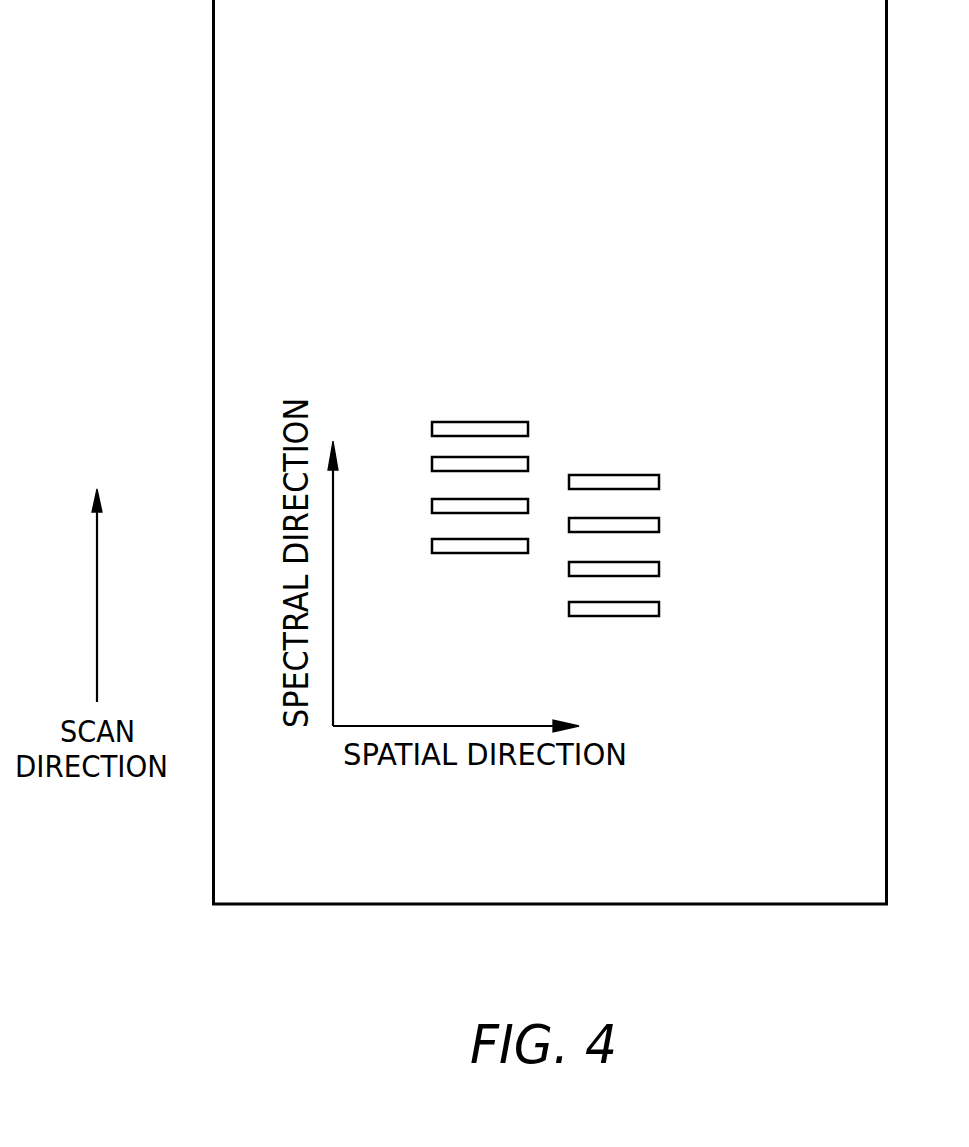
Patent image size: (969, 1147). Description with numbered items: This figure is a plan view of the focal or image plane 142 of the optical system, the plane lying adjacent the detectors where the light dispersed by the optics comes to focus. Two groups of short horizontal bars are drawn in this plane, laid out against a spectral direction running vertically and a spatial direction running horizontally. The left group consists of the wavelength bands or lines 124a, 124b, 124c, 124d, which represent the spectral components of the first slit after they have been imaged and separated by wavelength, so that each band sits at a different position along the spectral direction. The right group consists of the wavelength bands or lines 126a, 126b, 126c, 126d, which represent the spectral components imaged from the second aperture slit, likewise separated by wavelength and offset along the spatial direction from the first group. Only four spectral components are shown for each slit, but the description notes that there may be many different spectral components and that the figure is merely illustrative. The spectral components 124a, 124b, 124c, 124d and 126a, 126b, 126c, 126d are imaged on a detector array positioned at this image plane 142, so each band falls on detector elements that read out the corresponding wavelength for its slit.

The wavelength band 124a is at (432, 422).
The wavelength band 124b is at (432, 461).
The wavelength band 124c is at (432, 505).
The wavelength band 124d is at (432, 547).
The wavelength band 126a is at (659, 483).
The wavelength band 126b is at (659, 526).
The wavelength band 126c is at (659, 570).
The wavelength band 126d is at (659, 609).
The focal or image plane 142 is at (629, 412).